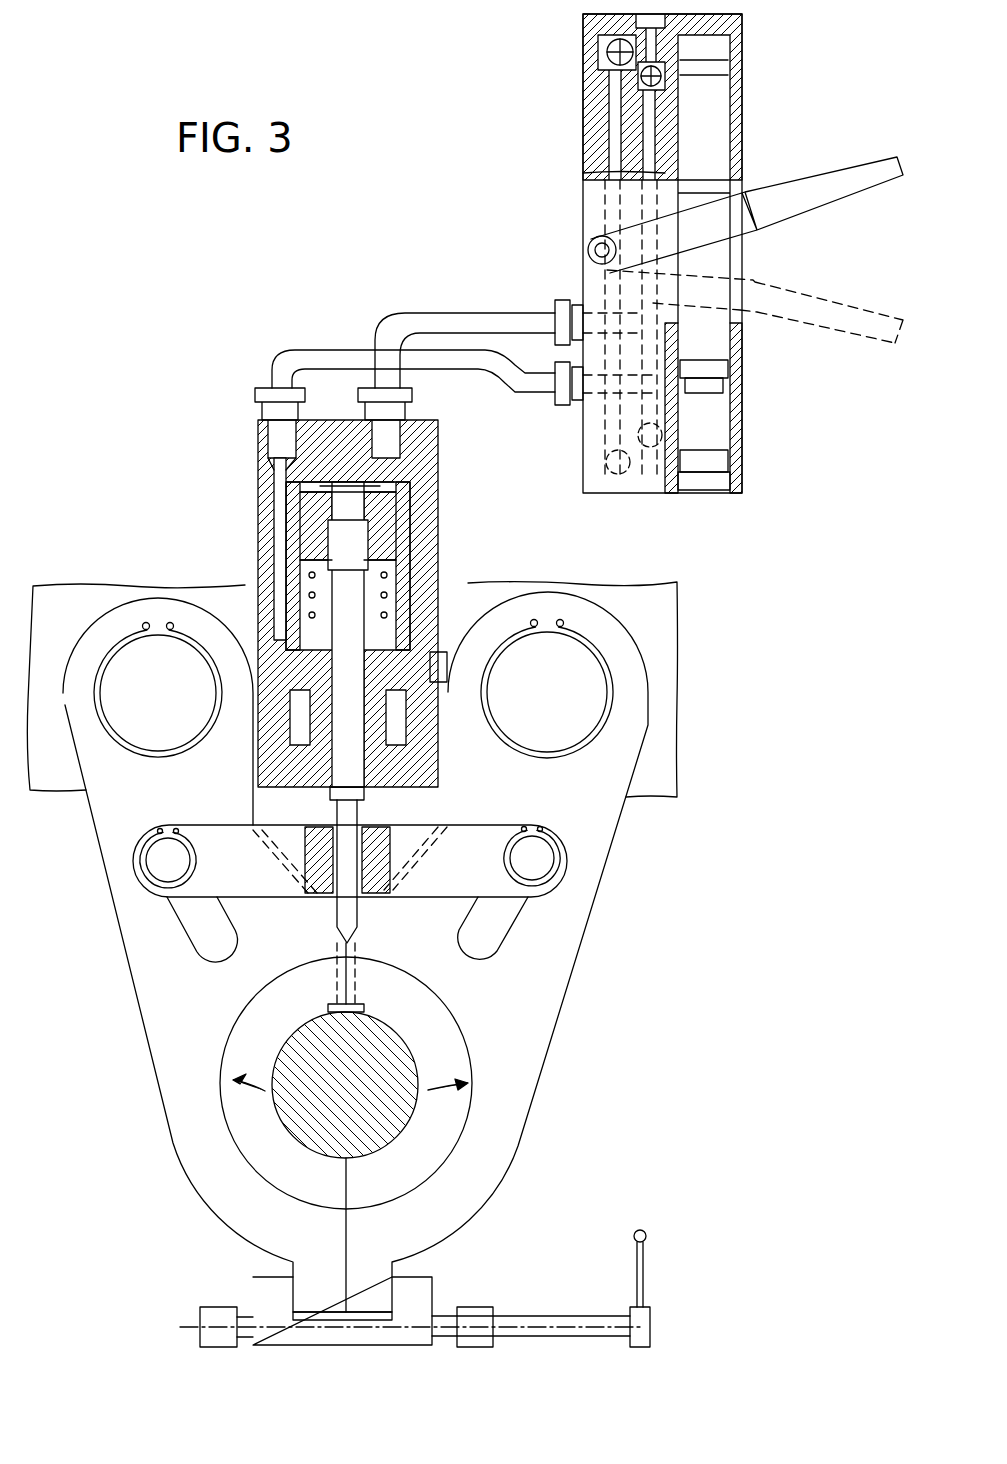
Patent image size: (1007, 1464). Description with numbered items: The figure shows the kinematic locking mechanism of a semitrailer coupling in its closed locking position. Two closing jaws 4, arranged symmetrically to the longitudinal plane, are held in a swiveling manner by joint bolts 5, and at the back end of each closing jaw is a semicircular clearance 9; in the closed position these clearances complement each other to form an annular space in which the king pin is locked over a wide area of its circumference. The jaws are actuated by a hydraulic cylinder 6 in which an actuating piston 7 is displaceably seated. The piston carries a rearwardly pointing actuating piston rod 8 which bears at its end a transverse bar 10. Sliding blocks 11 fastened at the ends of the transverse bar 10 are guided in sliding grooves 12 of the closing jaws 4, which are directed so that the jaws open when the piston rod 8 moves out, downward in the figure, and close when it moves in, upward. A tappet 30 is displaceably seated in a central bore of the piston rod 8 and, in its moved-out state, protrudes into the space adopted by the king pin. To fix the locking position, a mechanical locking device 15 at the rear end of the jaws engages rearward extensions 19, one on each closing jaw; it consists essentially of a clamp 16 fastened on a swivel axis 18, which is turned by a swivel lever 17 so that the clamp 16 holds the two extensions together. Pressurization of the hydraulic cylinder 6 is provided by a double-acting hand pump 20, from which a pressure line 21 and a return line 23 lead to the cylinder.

The closing jaws 4 is at (525, 1047).
The joint bolts 5 is at (528, 722).
The hydraulic cylinder 6 is at (439, 523).
The actuating piston 7 is at (390, 478).
The actuating piston rod 8 is at (356, 813).
The semicircular clearance 9 is at (322, 1140).
The transverse bar 10 is at (455, 826).
The sliding blocks 11 is at (538, 862).
The sliding grooves 12 is at (480, 950).
The mechanical locking device 15 is at (185, 1334).
The clamp 16 is at (263, 1295).
The swivel lever 17 is at (645, 1256).
The swivel axis 18 is at (556, 1312).
The rearward extensions 19 is at (316, 1295).
The double-acting hand pump 20 is at (583, 112).
The pressure line 21 is at (432, 318).
The return line 23 is at (318, 352).
The tappet 30 is at (342, 915).